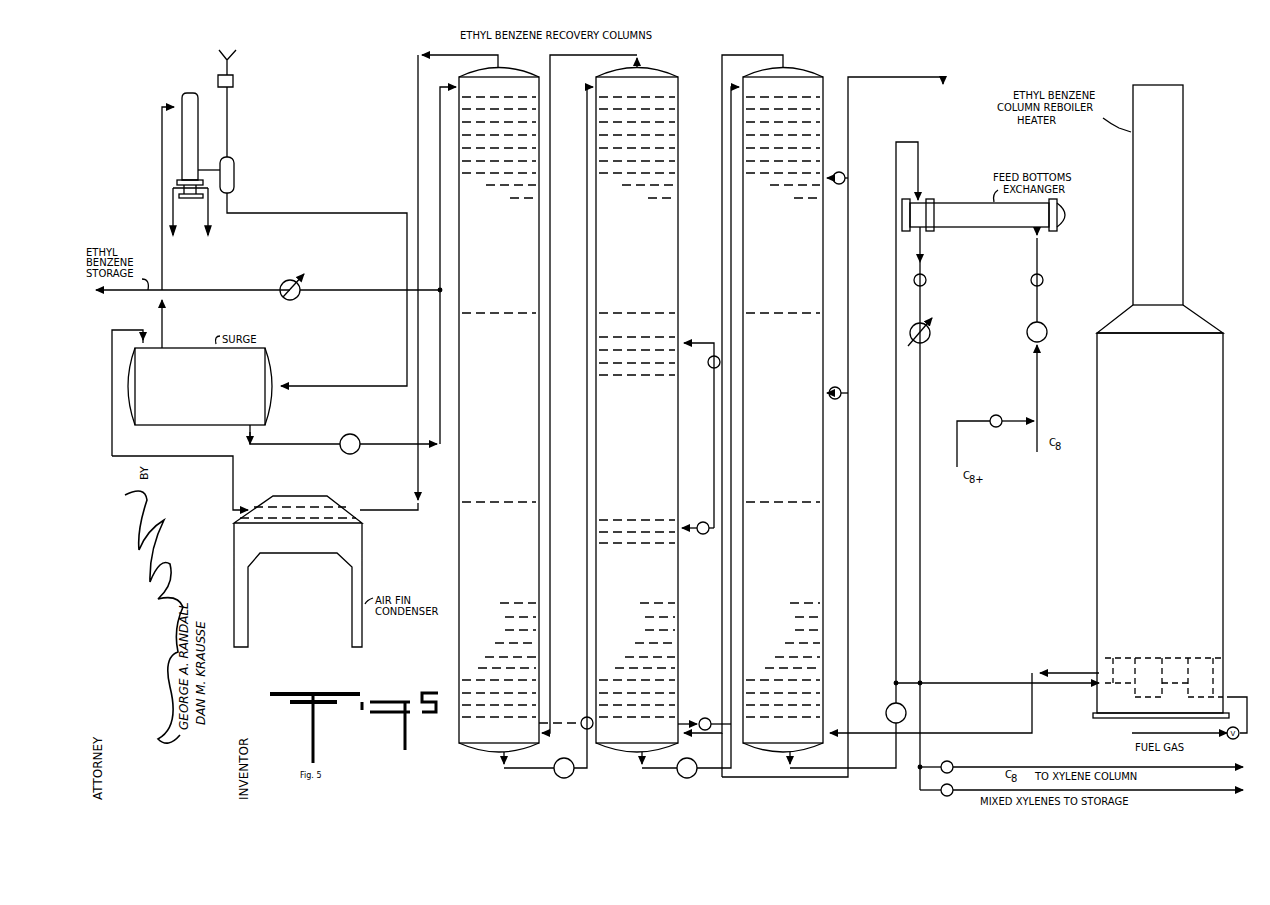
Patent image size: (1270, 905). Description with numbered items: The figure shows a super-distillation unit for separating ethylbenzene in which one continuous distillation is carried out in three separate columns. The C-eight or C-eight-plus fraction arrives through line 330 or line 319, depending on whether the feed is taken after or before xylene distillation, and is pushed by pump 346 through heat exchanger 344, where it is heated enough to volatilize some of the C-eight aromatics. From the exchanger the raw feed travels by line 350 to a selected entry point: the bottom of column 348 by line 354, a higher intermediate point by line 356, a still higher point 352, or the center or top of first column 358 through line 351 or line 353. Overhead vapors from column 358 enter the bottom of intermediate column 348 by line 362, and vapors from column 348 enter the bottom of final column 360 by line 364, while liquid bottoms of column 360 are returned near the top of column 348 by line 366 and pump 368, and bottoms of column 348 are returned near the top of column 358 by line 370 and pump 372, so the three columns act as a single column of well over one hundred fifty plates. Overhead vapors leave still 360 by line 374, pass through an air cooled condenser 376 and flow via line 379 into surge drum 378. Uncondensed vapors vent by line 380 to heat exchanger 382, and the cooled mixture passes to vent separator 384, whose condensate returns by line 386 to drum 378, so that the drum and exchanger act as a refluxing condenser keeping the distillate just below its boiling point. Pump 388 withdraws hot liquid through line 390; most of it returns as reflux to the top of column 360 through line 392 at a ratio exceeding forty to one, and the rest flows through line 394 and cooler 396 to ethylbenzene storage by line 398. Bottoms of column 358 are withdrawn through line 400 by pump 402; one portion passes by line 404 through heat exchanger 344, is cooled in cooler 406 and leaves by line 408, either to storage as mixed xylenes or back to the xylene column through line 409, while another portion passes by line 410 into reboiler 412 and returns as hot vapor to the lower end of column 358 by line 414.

The line 319 is at (959, 448).
The line 330 is at (1039, 402).
The heat exchanger 344 is at (975, 230).
The pump 346 is at (1046, 326).
The distillation column 348 is at (637, 416).
The line 350 is at (848, 100).
The line 351 is at (843, 395).
The still higher feed point 352 is at (712, 337).
The line 353 is at (845, 184).
The line 354 is at (686, 712).
The line 356 is at (692, 522).
The distillation column 358 is at (783, 416).
The distillation column 360 is at (499, 416).
The line 362 is at (720, 62).
The line 364 is at (547, 63).
The line 366 is at (586, 113).
The pump 368 is at (564, 779).
The line 370 is at (726, 111).
The pump 372 is at (687, 779).
The line 374 is at (414, 84).
The air fin condenser 376 is at (363, 546).
The surge drum 378 is at (200, 362).
The condensate line 379 is at (124, 325).
The line 380 is at (160, 170).
The heat exchanger 382 is at (182, 98).
The vent separator 384 is at (234, 170).
The line 386 is at (296, 210).
The pump 388 is at (353, 426).
The line 390 is at (283, 434).
The line 392 is at (416, 114).
The line 394 is at (328, 282).
The cooler 396 is at (282, 278).
The line 398 is at (217, 289).
The line 400 is at (876, 778).
The pump 402 is at (888, 702).
The line 404 is at (902, 140).
The cooler 406 is at (928, 338).
The line 408 is at (920, 380).
The line 409 is at (1055, 774).
The line 410 is at (1056, 690).
The reboiler 412 is at (1161, 401).
The line 414 is at (1060, 658).